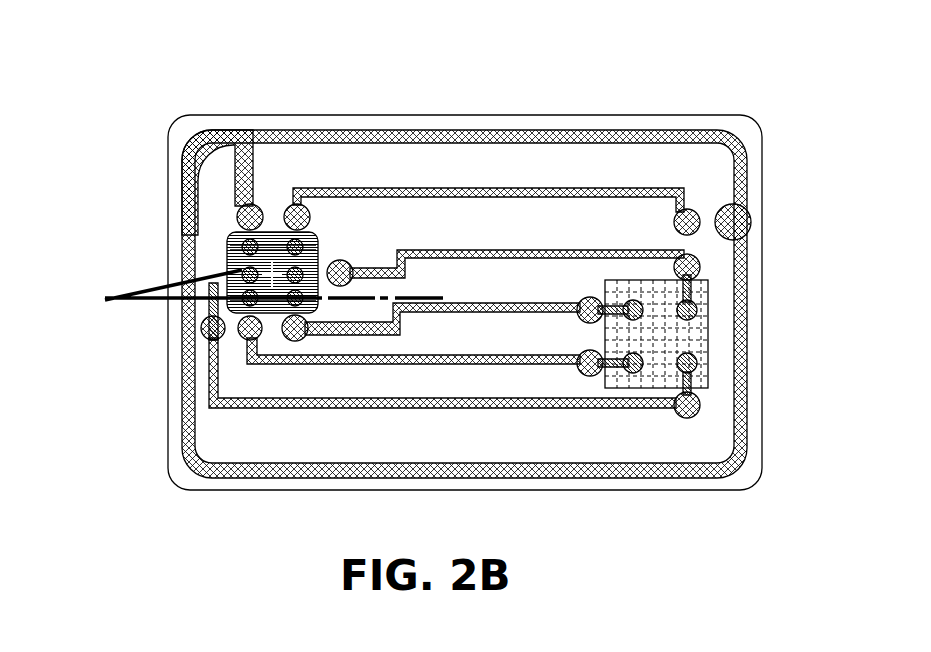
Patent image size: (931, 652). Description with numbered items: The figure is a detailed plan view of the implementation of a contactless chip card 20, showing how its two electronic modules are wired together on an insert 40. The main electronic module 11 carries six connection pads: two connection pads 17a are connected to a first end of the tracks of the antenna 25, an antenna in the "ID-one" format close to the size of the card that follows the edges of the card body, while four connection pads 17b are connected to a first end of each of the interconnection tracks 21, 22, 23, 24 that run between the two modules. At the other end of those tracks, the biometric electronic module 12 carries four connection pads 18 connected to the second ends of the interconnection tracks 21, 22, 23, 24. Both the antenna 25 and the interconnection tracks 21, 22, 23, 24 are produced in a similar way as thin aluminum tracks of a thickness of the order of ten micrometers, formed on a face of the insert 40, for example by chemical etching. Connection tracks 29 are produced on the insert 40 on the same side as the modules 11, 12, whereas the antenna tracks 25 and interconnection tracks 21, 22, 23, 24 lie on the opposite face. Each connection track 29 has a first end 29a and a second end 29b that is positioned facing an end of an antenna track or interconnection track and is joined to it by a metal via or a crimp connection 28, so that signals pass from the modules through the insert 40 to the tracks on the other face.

The chip card 20 is at (692, 86).
The insert 40 is at (742, 473).
The antenna 25 is at (325, 188).
The interconnection track 21 is at (403, 248).
The interconnection track 22 is at (480, 305).
The interconnection track 23 is at (501, 358).
The interconnection track 24 is at (537, 400).
The main electronic module 11 is at (232, 248).
The connection pads 17a is at (295, 205).
The connection pads 17b is at (284, 322).
The biometric electronic module 12 is at (708, 333).
The connection pads 18 is at (678, 372).
The crimp connection 28 is at (290, 334).
The connection tracks 29 is at (693, 287).
The first end of connection track 29a is at (256, 288).
The second end of connection track 29b is at (211, 318).